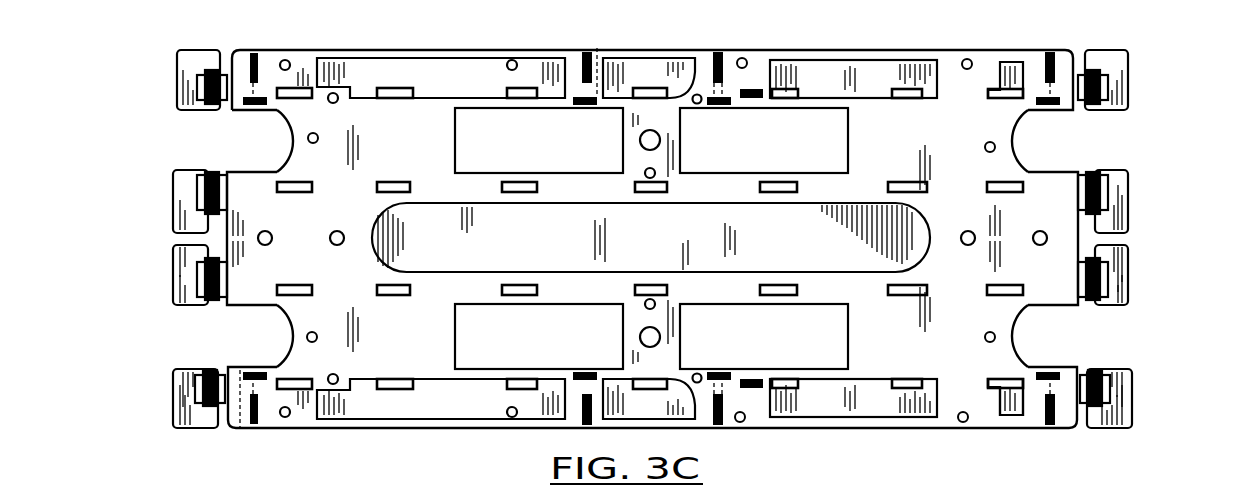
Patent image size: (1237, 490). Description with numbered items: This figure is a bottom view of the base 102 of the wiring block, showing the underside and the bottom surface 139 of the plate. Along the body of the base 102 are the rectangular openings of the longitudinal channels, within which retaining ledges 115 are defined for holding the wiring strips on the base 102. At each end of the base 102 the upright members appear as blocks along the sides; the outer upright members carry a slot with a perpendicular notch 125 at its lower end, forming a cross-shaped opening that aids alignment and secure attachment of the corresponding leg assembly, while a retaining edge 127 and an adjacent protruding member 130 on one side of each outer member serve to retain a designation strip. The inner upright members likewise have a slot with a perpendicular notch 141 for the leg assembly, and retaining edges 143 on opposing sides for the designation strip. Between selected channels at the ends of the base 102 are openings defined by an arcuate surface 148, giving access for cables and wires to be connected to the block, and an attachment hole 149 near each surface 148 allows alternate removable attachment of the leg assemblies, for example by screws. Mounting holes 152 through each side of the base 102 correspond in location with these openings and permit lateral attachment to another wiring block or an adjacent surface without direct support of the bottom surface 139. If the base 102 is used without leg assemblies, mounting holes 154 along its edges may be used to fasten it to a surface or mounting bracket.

The base 102 is at (1143, 57).
The retaining ledges 115 is at (936, 62).
The perpendicular notch 125 is at (1112, 392).
The retaining edge 127 is at (1093, 112).
The protruding member 130 is at (207, 115).
The bottom surface 139 is at (957, 372).
The perpendicular notch 141 is at (1108, 283).
The retaining edges 143 is at (1088, 166).
The arcuate surface 148 is at (286, 124).
The attachment hole 149 is at (307, 140).
The mounting holes 152 is at (600, 48).
The mounting holes 154 is at (746, 59).